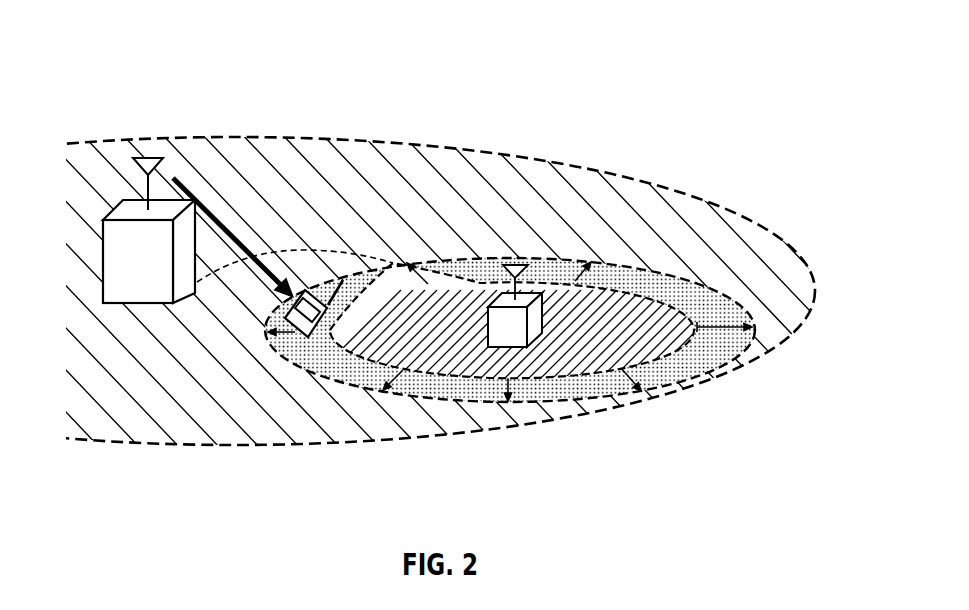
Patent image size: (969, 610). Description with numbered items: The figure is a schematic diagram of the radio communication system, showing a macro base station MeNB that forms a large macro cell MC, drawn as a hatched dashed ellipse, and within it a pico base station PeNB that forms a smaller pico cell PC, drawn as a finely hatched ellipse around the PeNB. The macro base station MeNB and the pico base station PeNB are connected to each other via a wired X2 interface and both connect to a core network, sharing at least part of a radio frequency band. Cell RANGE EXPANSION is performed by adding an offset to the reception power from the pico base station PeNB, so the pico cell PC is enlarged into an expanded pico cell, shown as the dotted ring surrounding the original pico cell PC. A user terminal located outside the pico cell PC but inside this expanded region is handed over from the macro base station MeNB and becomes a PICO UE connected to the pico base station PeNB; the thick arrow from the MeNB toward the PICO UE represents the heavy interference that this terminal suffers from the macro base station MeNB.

The macro cell MC is at (587, 168).
The pico cell PC is at (493, 255).
The X2 interface X2 is at (400, 256).
The macro base station MeNB is at (149, 246).
The pico base station PeNB is at (511, 319).
The pico terminal PICO UE is at (303, 323).
The cell range expansion RANGE EXPANSION is at (717, 330).